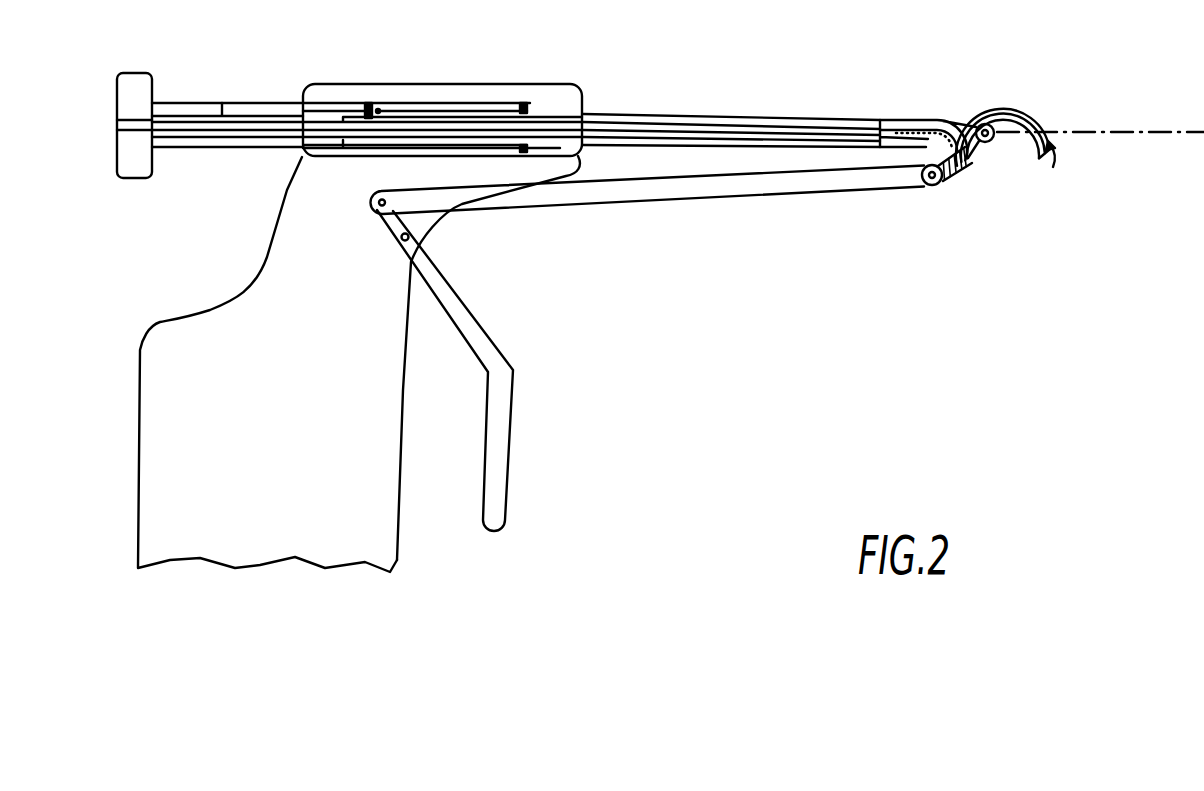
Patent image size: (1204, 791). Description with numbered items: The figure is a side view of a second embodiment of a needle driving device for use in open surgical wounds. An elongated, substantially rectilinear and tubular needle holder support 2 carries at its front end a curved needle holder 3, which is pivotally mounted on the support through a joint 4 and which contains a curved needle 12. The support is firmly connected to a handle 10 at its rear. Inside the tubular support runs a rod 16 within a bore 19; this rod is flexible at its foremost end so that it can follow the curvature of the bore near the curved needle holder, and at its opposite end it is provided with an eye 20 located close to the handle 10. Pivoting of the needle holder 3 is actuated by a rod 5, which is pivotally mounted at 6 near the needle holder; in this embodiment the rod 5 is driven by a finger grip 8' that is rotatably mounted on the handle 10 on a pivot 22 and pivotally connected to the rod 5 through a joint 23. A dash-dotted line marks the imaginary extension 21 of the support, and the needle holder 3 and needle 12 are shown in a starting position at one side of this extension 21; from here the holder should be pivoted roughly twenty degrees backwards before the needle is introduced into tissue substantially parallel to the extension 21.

The needle holder support 2 is at (908, 113).
The needle holder 3 is at (998, 205).
The joint 4 is at (985, 123).
The rod 5 is at (722, 196).
The pivotal mounting 6 is at (929, 186).
The finger grip 8' is at (470, 370).
The handle 10 is at (198, 338).
The needle 12 is at (1055, 158).
The rod 16 is at (605, 122).
The bore 19 is at (712, 127).
The eye 20 is at (135, 80).
The imaginary extension 21 is at (1128, 131).
The pivot 22 is at (410, 236).
The joint 23 is at (372, 204).